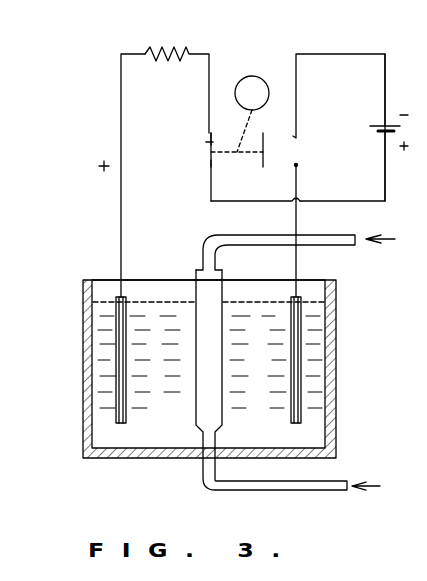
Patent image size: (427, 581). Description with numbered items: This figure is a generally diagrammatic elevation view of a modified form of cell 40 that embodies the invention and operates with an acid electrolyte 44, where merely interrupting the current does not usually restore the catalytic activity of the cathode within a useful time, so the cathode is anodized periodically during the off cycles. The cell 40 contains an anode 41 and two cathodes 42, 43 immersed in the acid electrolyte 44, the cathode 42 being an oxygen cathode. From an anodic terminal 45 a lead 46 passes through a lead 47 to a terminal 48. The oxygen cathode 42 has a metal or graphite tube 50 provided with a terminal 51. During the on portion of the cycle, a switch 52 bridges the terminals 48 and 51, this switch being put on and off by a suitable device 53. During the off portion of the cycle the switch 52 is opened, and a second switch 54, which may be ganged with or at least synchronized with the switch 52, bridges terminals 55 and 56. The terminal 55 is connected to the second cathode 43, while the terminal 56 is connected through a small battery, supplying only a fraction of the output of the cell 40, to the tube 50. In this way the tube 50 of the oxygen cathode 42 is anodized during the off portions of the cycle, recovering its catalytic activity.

The cell 40 is at (337, 375).
The anode 41 is at (127, 408).
The oxygen cathode 42 is at (197, 361).
The second cathode 43 is at (291, 378).
The acid electrolyte 44 is at (98, 342).
The anodic terminal 45 is at (121, 163).
The lead 46 is at (121, 108).
The lead 47 is at (165, 52).
The terminal 48 is at (209, 134).
The metal or graphite tube 50 is at (222, 331).
The terminal 51 is at (209, 167).
The switch 52 is at (208, 152).
The device 53 is at (243, 78).
The switch 54 is at (263, 163).
The terminal 55 is at (297, 165).
The terminal 56 is at (296, 137).